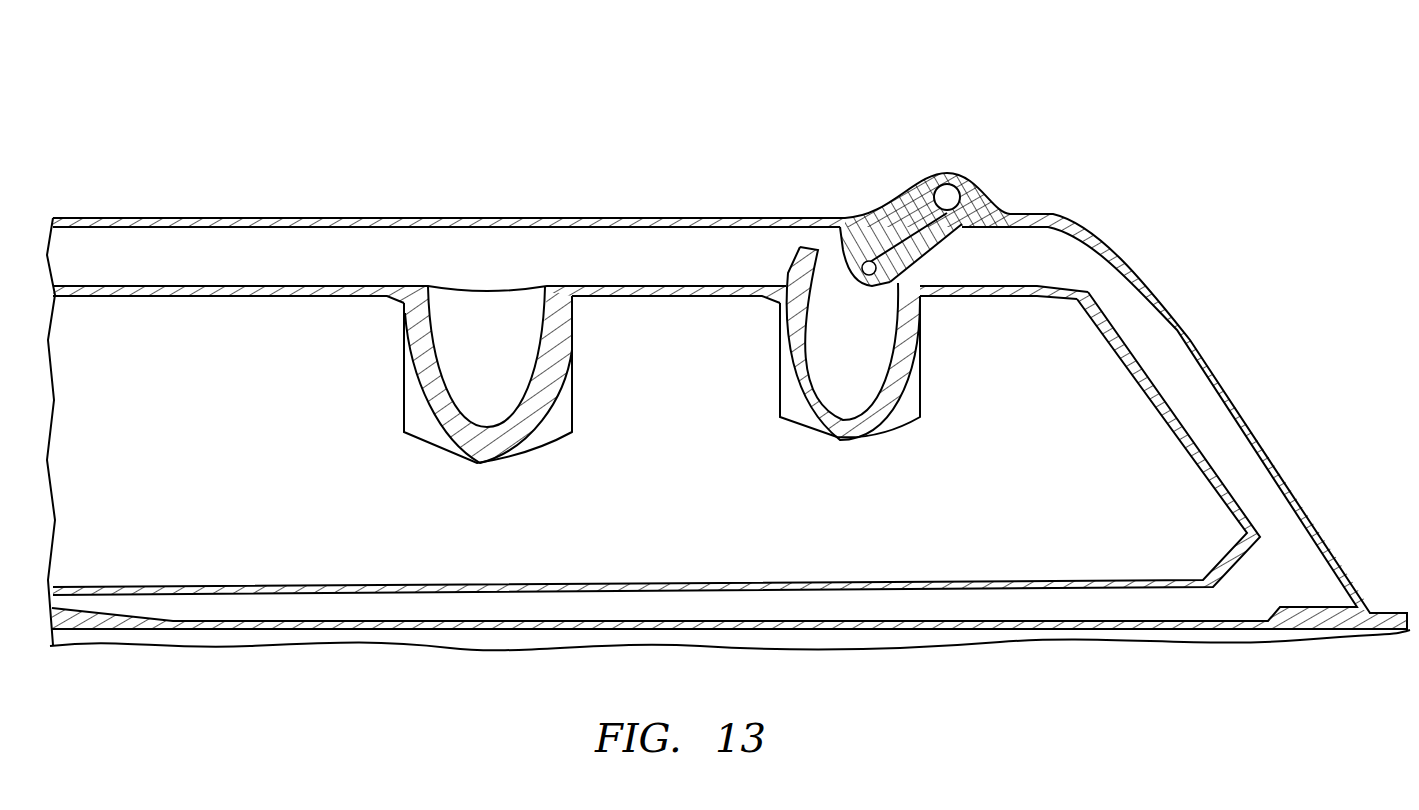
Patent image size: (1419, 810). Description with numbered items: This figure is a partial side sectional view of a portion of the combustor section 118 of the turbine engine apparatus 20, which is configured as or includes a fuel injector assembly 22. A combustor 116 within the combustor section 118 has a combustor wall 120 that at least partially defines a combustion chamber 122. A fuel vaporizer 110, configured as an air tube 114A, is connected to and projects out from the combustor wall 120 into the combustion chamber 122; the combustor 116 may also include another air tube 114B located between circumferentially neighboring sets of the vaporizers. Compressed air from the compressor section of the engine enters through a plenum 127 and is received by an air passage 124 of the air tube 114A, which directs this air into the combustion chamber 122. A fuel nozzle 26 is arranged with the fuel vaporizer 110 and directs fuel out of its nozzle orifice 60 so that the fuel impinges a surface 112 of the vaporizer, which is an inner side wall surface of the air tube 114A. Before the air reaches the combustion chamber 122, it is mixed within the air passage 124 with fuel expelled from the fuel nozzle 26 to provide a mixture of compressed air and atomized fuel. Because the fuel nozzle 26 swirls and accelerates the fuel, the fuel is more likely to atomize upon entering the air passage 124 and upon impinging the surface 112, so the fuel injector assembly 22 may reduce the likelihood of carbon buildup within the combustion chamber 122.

The turbine engine apparatus 20 is at (1030, 118).
The fuel injector assembly 22 is at (903, 191).
The fuel nozzle 26 is at (883, 200).
The nozzle orifice 60 is at (856, 265).
The fuel vaporizer 110 is at (920, 373).
The surface 112 is at (813, 388).
The air tube 114A is at (941, 325).
The air tube 114B is at (566, 394).
The combustor 116 is at (1170, 392).
The combustor section 118 is at (1060, 185).
The combustor wall 120 is at (648, 285).
The combustion chamber 122 is at (987, 539).
The air passage 124 is at (842, 308).
The plenum 127 is at (403, 252).